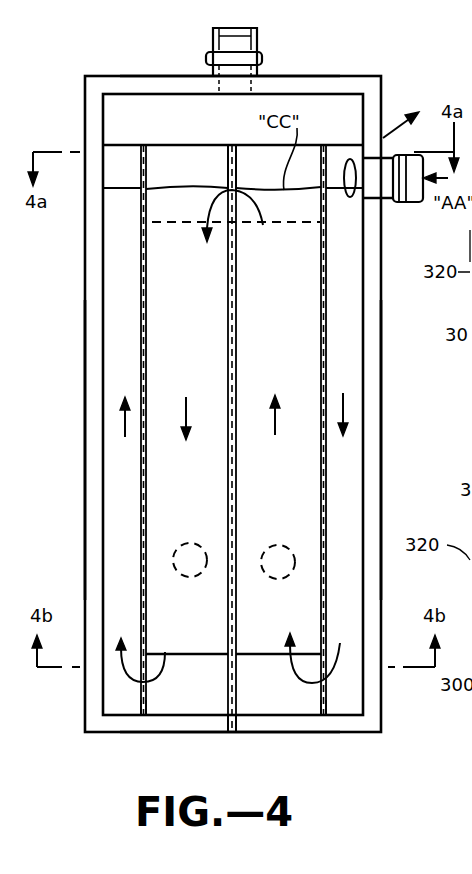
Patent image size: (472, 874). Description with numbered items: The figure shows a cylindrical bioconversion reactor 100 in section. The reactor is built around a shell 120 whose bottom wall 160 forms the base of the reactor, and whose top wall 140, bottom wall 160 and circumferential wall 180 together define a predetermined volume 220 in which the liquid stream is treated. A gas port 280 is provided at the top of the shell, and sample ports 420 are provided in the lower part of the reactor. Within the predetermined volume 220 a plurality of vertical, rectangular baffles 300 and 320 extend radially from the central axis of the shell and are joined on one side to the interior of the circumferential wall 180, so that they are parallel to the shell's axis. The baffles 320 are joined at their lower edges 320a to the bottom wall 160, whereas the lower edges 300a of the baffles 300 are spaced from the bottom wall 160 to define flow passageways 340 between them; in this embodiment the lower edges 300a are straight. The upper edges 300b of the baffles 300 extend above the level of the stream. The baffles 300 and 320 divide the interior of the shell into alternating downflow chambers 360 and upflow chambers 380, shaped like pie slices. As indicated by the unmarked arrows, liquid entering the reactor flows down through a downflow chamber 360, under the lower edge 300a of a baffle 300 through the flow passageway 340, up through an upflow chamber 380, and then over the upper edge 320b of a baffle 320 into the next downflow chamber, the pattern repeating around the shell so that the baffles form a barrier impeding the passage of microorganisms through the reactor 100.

The bioconversion reactor 100 is at (380, 60).
The shell 120 is at (86, 468).
The top wall 140 is at (314, 80).
The bottom wall 160 is at (193, 733).
The circumferential wall 180 is at (376, 378).
The predetermined volume 220 is at (152, 110).
The gas port 280 is at (258, 44).
The baffles 300 is at (140, 338).
The lower edges of baffles 300 300a is at (163, 662).
The upper edges of baffles 300 300b is at (143, 145).
The baffles 320 is at (238, 352).
The lower edges of baffles 320 320a is at (233, 733).
The upper edge of baffle 320 320b is at (243, 222).
The flow passageways 340 is at (142, 725).
The downflow chamber 360 is at (392, 578).
The upflow chamber 380 is at (120, 376).
The sample ports 420 is at (267, 548).